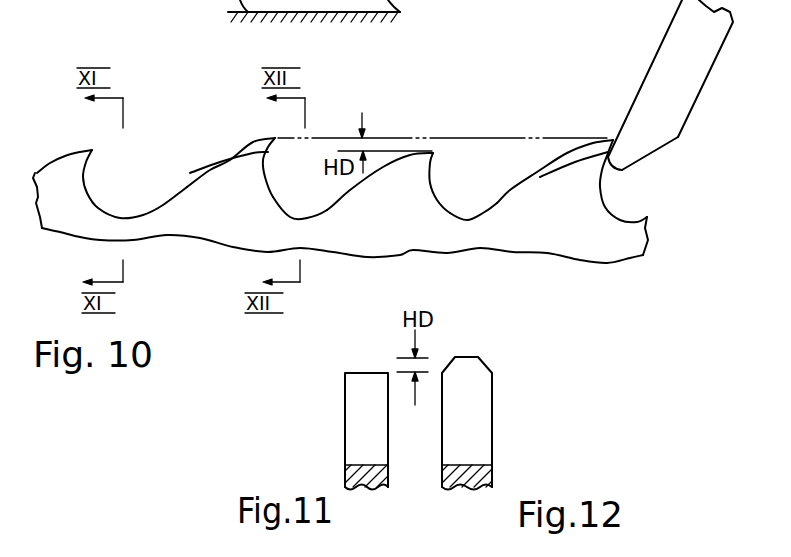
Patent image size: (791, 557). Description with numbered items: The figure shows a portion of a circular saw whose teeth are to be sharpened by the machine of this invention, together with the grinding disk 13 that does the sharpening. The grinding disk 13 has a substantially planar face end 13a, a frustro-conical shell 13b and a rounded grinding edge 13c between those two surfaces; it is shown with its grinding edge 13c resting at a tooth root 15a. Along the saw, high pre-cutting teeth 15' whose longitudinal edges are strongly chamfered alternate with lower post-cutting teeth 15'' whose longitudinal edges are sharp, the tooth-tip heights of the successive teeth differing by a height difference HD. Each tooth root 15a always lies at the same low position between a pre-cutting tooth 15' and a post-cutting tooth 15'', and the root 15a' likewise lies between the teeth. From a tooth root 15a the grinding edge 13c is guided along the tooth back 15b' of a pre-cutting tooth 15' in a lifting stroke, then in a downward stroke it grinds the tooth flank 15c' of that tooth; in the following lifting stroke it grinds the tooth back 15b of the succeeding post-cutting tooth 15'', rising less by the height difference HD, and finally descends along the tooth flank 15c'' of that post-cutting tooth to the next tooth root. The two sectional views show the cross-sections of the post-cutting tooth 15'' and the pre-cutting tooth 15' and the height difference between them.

In FIG. 10, the grinding disk 13 is at (638, 60).
In FIG. 10, the planar face end 13a is at (626, 118).
In FIG. 10, the frustro-conical shell 13b is at (641, 160).
In FIG. 10, the rounded grinding edge 13c is at (618, 173).
In FIG. 10, the pre-cutting tooth 15' is at (303, 173).
In FIG. 12, the pre-cutting tooth 15' is at (493, 423).
In FIG. 10, the post-cutting tooth 15'' is at (445, 174).
In FIG. 11, the post-cutting tooth 15'' is at (343, 431).
In FIG. 10, the tooth root 15a is at (448, 223).
In FIG. 10, the gullet of high tooth 15a' is at (282, 218).
In FIG. 10, the tooth back / top line 15b is at (445, 154).
In FIG. 10, the tooth back 15b' is at (224, 146).
In FIG. 10, the tooth flank 15c' is at (291, 167).
In FIG. 10, the tooth flank 15c'' is at (461, 183).